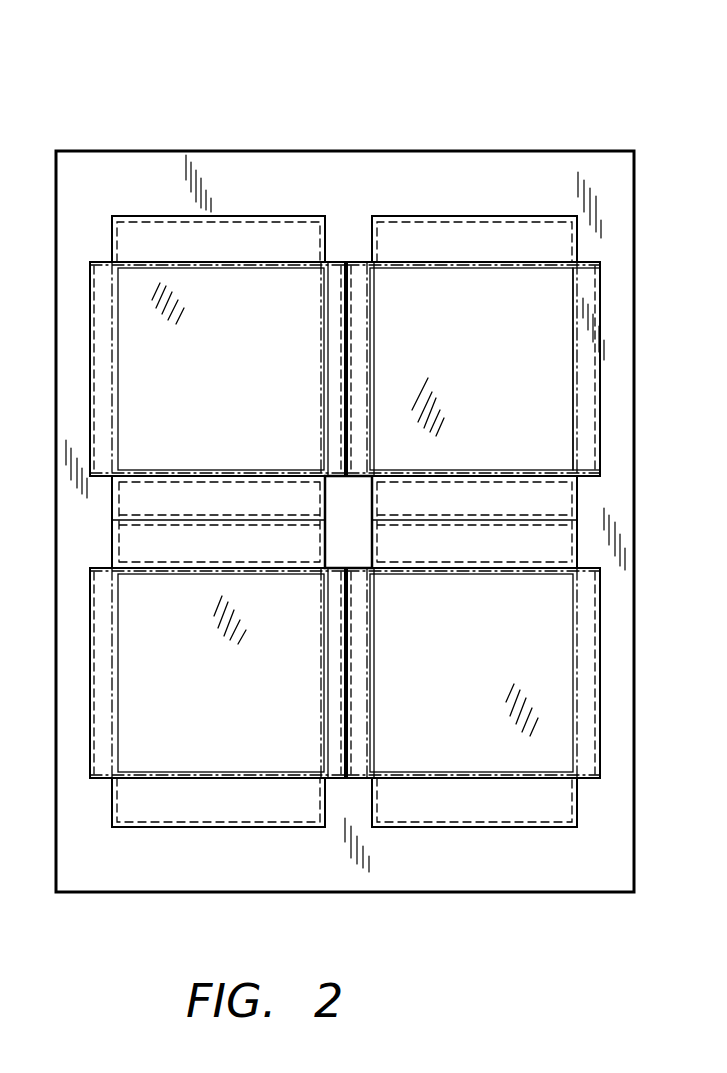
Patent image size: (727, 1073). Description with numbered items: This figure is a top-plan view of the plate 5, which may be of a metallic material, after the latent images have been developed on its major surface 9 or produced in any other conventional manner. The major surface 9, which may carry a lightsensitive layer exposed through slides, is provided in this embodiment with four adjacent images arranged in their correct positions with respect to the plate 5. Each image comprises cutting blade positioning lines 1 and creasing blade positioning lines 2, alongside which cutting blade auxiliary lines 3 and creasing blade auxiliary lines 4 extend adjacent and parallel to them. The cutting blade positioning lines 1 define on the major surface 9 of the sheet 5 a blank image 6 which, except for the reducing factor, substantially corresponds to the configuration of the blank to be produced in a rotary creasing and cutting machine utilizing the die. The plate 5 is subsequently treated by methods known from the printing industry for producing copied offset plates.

The cutting blade positioning line 1 is at (226, 216).
The creasing blade positioning line 2 is at (165, 262).
The cutting blade auxiliary line 3 is at (300, 222).
The creasing blade auxiliary line 4 is at (585, 302).
The plate 5 is at (611, 136).
The blank image 6 is at (345, 520).
The major surface 9 is at (611, 207).